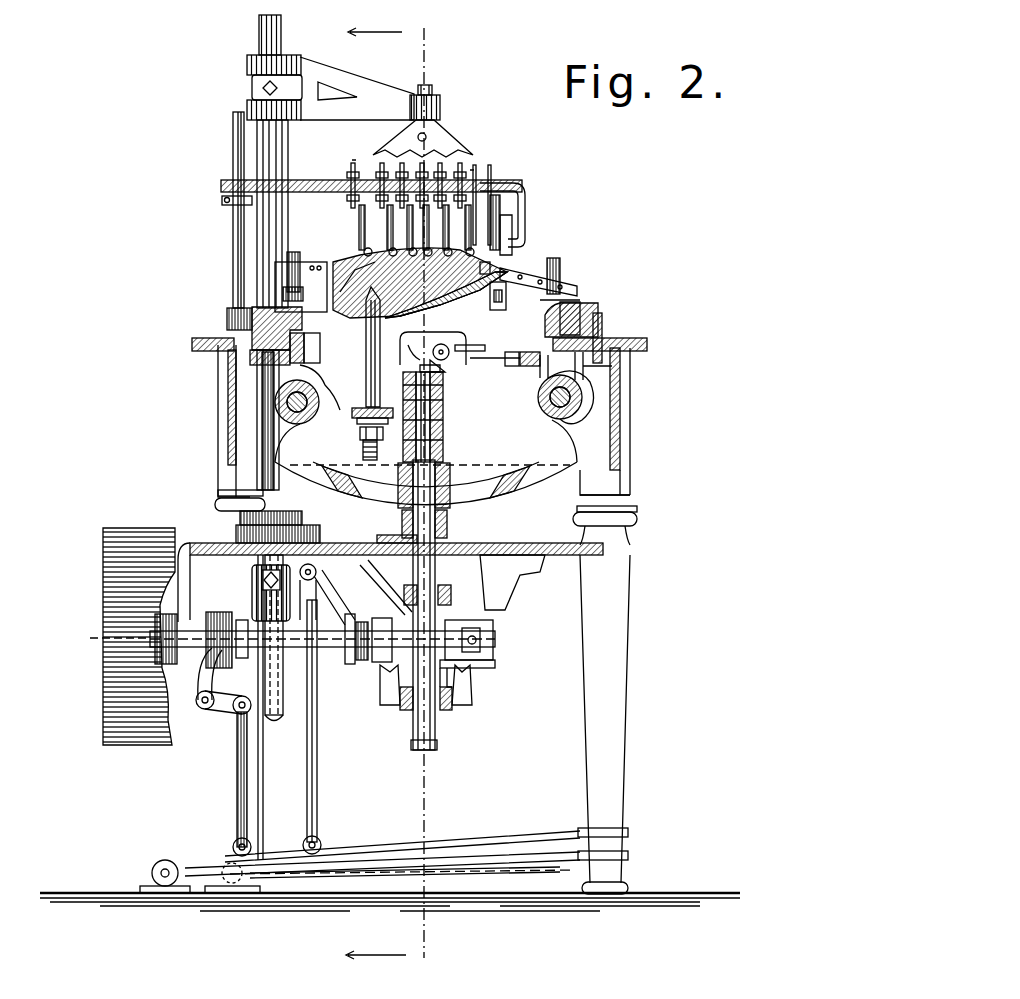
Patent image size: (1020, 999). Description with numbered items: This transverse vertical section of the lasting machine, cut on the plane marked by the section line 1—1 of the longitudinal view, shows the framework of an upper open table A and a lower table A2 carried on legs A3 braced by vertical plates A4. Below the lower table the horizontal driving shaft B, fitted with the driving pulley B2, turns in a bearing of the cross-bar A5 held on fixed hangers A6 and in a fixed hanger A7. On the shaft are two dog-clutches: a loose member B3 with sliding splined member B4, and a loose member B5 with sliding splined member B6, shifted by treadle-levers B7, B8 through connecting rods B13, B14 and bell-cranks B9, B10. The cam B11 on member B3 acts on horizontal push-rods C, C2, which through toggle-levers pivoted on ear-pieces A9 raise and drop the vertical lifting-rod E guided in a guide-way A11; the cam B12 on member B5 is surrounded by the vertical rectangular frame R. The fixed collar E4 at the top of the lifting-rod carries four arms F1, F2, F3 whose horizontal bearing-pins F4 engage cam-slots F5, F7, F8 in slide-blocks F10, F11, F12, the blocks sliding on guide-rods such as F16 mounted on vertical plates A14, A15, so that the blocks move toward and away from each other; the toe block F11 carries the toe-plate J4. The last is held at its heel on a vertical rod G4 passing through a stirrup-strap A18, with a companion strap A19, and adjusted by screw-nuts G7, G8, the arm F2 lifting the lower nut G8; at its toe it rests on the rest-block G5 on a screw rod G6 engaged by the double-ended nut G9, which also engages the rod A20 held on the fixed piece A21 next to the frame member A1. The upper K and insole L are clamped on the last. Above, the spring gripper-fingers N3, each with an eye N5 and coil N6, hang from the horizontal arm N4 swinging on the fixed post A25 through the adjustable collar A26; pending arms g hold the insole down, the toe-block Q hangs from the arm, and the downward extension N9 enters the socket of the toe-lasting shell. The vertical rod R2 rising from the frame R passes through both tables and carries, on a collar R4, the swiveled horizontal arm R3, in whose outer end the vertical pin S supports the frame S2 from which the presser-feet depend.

The section line 1 is at (386, 498).
The vertical rectangular frame R is at (283, 682).
The vertical rod R2 is at (266, 442).
The horizontal arm R3 is at (338, 74).
The collar R4 is at (250, 90).
The vertical pin S is at (437, 88).
The frame S2 is at (447, 143).
The pending arms g is at (354, 168).
The fixed post A25 is at (234, 157).
The adjustable collar A26 is at (226, 206).
The horizontal arm N4 is at (298, 183).
The spring gripper-finger N3 is at (368, 228).
The coil N6 is at (522, 186).
The eye N5 is at (502, 212).
The downward extension N9 is at (514, 225).
The insole L is at (335, 266).
The push-rod C2 is at (350, 268).
The toe-block Q is at (528, 264).
The upper K is at (330, 290).
The rest-block G5 is at (522, 264).
The toe-plate J4 is at (562, 284).
The screw-threaded rod G6 is at (508, 297).
The slide-block F12 is at (574, 322).
The vertical plate A15 is at (603, 342).
The upper table A is at (200, 347).
The vertical plate A14 is at (243, 340).
The slide-block F11 is at (276, 354).
The cam-slot F5 is at (298, 356).
The cam-slot F7 is at (308, 392).
The bearing-pins F4 is at (412, 362).
The cam-slot F8 is at (576, 396).
The guide-rod F16 is at (546, 364).
The horizontal-piece A21 is at (472, 352).
The frame A1 is at (494, 367).
The screw-threaded rod A20 is at (524, 352).
The vertical rod G4 is at (366, 342).
The upper screw-nut G7 is at (354, 413).
The lower screw-nut G8 is at (383, 435).
The stirrup-strap A18 is at (362, 426).
The stirrup-strap A19 is at (419, 372).
The slide-block F10 is at (452, 422).
The double-ended screw-threaded nut G9 is at (442, 360).
The arm F1 is at (444, 440).
The arm F2 is at (332, 468).
The arm F3 is at (470, 466).
The plates A4 is at (228, 425).
The fixed collar E4 is at (451, 488).
The lifting-rod E is at (449, 528).
The guide-way A11 is at (474, 546).
The lower table A2 is at (215, 543).
The fixed hanger A7 is at (186, 601).
The legs A3 is at (264, 804).
The driving pulley B2 is at (130, 646).
The driving-shaft B is at (312, 648).
The sliding splined member B6 is at (219, 612).
The loose member B5 is at (254, 666).
The bell-crank B10 is at (232, 712).
The connecting rod B14 is at (237, 765).
The cam B12 is at (280, 722).
The bell-crank B9 is at (317, 575).
The connecting rod B13 is at (316, 746).
The fixed hangers A6 is at (372, 586).
The sliding splined member B4 is at (357, 664).
The ear-pieces A9 is at (503, 599).
The loose member B3 is at (400, 710).
The cross-bar A5 is at (478, 656).
The push-rod C is at (470, 664).
The cam B11 is at (412, 742).
The treadle-lever B7 is at (342, 858).
The treadle-lever B8 is at (214, 866).